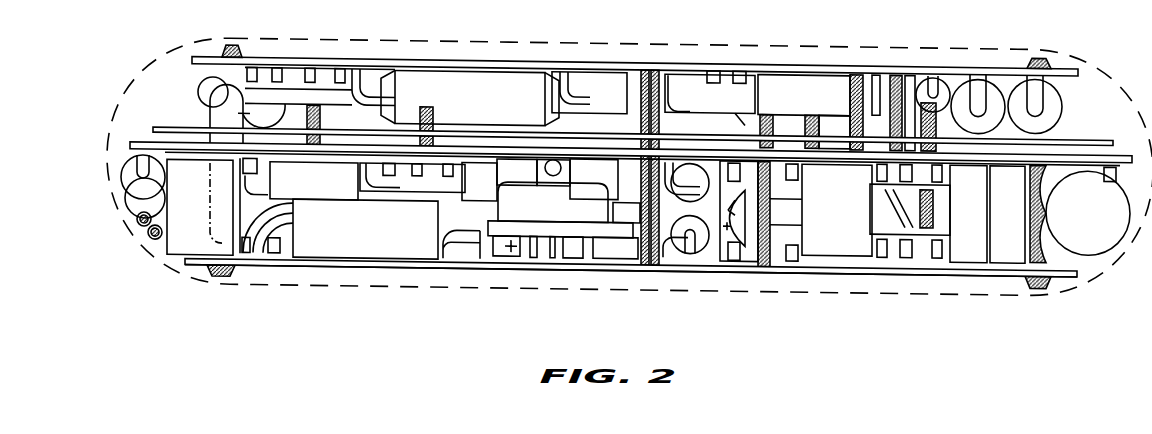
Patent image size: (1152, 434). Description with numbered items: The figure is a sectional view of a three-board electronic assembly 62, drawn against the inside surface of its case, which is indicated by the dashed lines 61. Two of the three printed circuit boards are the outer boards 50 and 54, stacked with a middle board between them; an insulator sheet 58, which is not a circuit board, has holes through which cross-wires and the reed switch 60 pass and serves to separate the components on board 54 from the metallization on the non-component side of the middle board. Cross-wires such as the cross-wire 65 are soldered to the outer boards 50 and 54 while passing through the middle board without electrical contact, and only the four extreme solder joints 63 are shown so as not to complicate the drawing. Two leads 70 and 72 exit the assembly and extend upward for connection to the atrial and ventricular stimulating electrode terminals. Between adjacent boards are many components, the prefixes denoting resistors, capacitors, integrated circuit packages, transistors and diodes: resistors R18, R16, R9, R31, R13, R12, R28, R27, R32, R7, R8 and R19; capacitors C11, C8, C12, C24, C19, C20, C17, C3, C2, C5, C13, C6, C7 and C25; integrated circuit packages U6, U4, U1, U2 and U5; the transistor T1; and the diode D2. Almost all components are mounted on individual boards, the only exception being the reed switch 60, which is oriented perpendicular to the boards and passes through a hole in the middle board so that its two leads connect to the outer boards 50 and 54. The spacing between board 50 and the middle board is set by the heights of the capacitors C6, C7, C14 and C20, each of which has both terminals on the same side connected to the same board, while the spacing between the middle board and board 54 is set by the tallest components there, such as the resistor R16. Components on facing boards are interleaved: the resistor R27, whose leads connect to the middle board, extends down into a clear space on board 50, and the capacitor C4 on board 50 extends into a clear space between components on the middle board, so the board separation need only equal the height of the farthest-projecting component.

The printed circuit board 50 is at (953, 263).
The printed circuit board 54 is at (1076, 52).
The insulator sheet 58 is at (1112, 127).
The reed switch 60 is at (210, 109).
The dashed lines 61 is at (356, 36).
The three-board electronic assembly 62 is at (829, 272).
The solder joints 63 is at (233, 42).
The cross-wire 65 is at (657, 256).
The lead 70 is at (136, 220).
The lead 72 is at (148, 234).
The resistor R18 is at (199, 84).
The capacitor C11 is at (233, 111).
The integrated circuit package U6 is at (327, 117).
The resistor R16 is at (457, 99).
The diode D2 is at (552, 154).
The capacitor C8 is at (598, 62).
The capacitor C12 is at (616, 106).
The integrated circuit package U4 is at (720, 97).
The capacitor C24 is at (772, 92).
The resistor R9 is at (840, 112).
The resistor R31 is at (945, 78).
The resistor R13 is at (994, 79).
The resistor R12 is at (1058, 95).
The resistor R28 is at (135, 168).
The capacitor C19 is at (128, 192).
The capacitor C20 is at (182, 211).
The resistor R27 is at (303, 184).
The integrated circuit package U1 is at (292, 203).
The capacitor C4 is at (347, 241).
The integrated circuit package U2 is at (418, 186).
The capacitor C17 is at (472, 181).
The capacitor C3 is at (464, 219).
The capacitor C2 is at (504, 173).
The transistor T1 is at (545, 206).
The resistor R32 is at (586, 174).
The capacitor C5 is at (623, 199).
The resistor R7 is at (628, 241).
The resistor R8 is at (704, 241).
The resistor R19 is at (688, 193).
The capacitor C13 is at (746, 209).
The integrated circuit package U5 is at (871, 189).
The capacitor C14 is at (818, 219).
The capacitor C6 is at (973, 237).
The capacitor C7 is at (1012, 237).
The capacitor C25 is at (1076, 204).